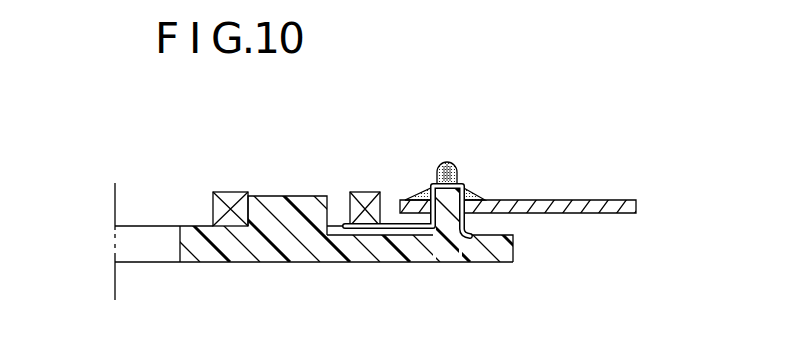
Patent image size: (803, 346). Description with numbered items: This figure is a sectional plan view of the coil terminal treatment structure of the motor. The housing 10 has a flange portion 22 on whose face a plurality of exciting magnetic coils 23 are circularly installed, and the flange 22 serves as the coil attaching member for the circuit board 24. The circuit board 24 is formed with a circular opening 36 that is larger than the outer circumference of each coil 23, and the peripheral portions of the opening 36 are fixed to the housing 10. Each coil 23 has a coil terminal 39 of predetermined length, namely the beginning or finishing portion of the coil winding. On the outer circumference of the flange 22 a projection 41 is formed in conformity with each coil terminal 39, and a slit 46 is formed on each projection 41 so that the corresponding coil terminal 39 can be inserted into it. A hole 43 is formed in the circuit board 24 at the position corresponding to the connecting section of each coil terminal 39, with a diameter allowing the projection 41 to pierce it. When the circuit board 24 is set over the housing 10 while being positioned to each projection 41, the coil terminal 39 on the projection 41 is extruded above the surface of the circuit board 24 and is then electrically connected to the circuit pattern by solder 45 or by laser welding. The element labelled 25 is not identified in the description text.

The housing 10 is at (215, 265).
The flange portion 22 is at (352, 250).
The exciting magnetic coil 23 is at (230, 192).
The circuit board 24 is at (589, 197).
The raised block 25 is at (285, 196).
The circular opening 36 is at (401, 195).
The coil terminal 39 is at (398, 232).
The projection 41 is at (458, 177).
The hole 43 is at (498, 205).
The solder 45 is at (478, 195).
The slit 46 is at (448, 163).